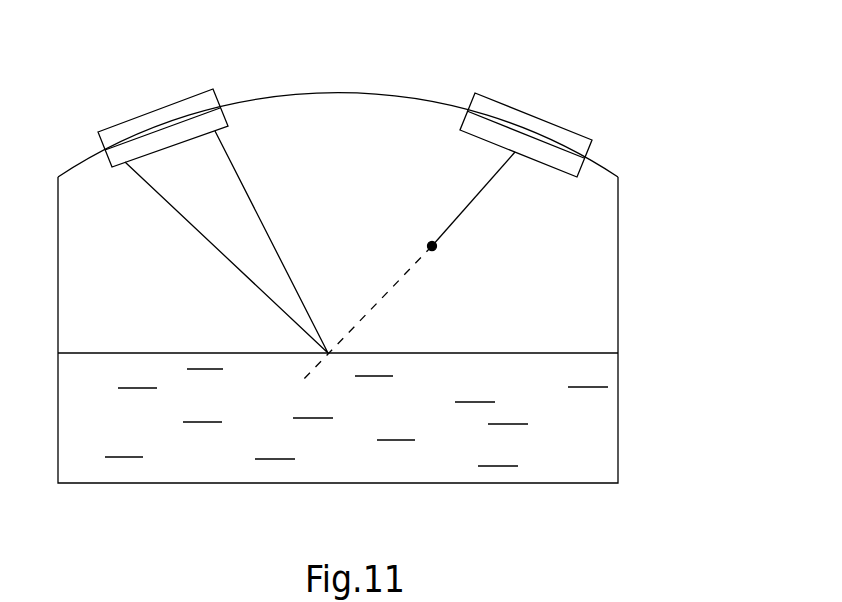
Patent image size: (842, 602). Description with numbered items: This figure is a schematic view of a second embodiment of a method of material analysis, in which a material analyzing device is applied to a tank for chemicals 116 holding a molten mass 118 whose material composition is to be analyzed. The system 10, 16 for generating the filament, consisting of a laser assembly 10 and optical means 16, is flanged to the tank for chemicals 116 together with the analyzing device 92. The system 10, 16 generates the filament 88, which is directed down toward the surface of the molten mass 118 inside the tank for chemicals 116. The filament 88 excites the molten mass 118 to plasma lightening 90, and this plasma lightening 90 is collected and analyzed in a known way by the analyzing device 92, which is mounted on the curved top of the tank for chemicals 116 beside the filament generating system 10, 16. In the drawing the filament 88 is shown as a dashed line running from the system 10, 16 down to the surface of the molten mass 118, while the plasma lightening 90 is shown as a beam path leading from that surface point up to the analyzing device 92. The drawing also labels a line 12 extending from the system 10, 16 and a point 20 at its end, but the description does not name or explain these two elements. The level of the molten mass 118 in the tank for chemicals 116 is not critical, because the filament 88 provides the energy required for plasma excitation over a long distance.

The laser assembly 10 is at (574, 114).
The optical means 16 is at (535, 135).
The detection beam path 12 is at (475, 202).
The focal point 20 is at (432, 246).
The filament 88 is at (380, 298).
The plasma lightening 90 is at (230, 210).
The analyzing device 92 is at (193, 103).
The tank for chemicals 116 is at (618, 283).
The molten mass 118 is at (597, 423).